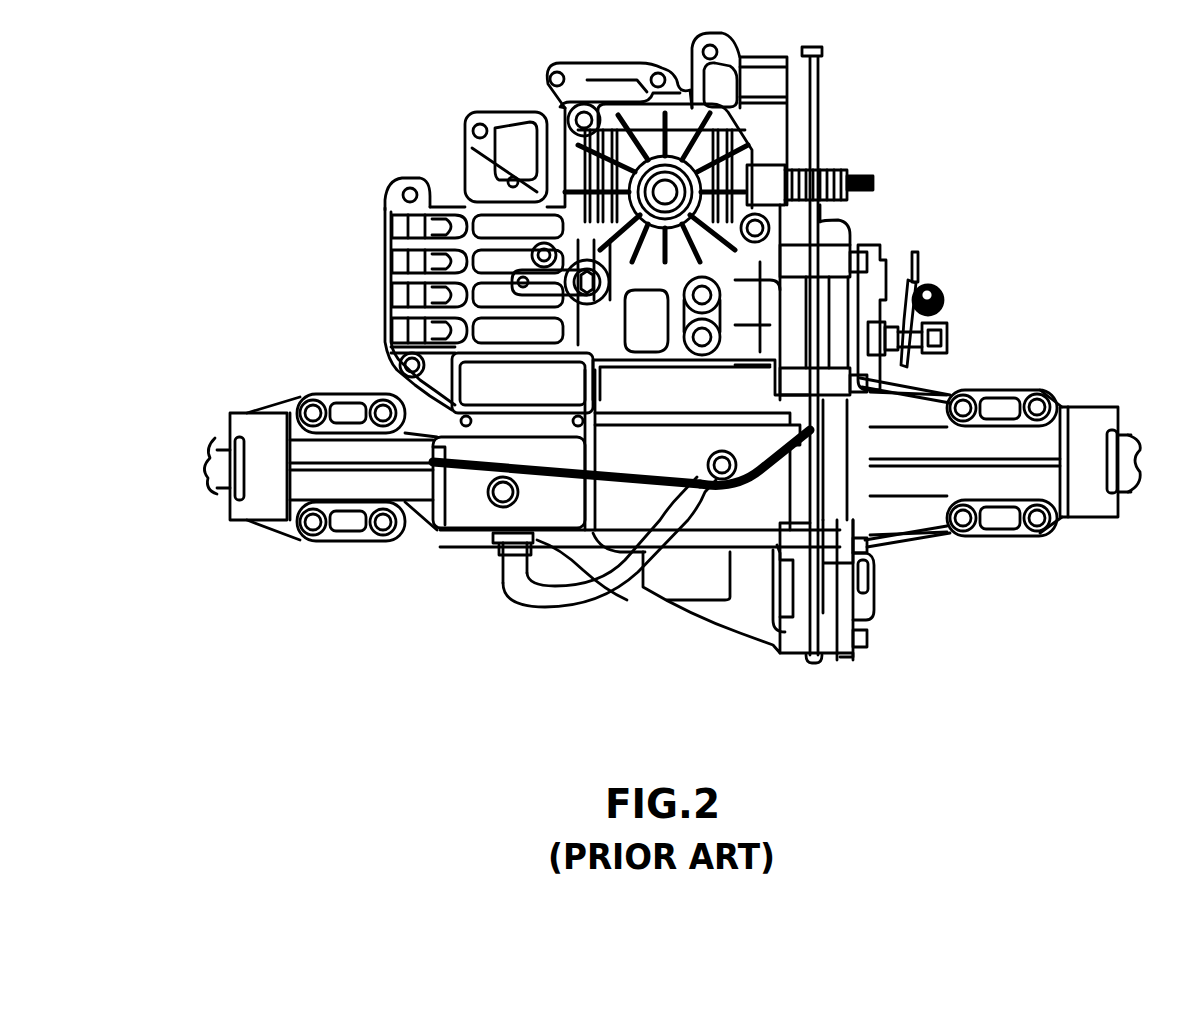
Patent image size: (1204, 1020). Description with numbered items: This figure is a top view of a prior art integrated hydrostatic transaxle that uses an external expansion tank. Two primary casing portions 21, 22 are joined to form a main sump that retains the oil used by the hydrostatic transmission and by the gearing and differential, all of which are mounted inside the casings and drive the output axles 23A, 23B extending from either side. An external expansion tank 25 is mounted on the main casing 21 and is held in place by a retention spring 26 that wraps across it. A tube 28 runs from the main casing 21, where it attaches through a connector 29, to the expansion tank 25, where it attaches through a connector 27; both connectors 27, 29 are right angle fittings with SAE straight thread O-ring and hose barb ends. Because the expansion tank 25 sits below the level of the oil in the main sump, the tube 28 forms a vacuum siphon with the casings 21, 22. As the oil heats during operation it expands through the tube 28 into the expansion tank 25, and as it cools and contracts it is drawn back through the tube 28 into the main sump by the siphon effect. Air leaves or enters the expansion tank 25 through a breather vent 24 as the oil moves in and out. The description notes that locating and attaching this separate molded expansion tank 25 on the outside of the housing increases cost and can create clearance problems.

The main casing 21 is at (713, 577).
The casing portion 22 is at (873, 597).
The output axle 23A is at (215, 488).
The output axle 23B is at (1138, 475).
The breather vent 24 is at (502, 500).
The external expansion tank 25 is at (440, 515).
The retention spring 26 is at (477, 478).
The connector 27 is at (527, 560).
The tube 28 is at (613, 580).
The connector 29 is at (712, 458).